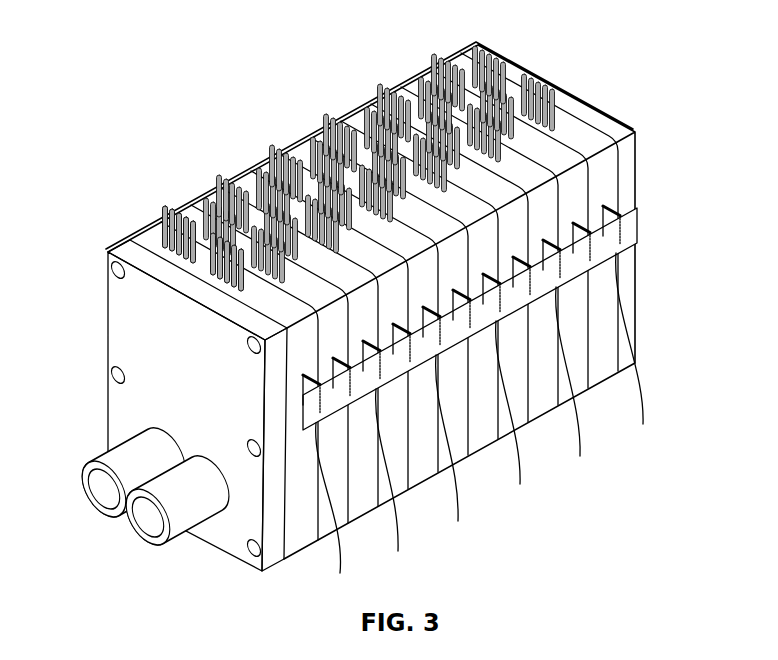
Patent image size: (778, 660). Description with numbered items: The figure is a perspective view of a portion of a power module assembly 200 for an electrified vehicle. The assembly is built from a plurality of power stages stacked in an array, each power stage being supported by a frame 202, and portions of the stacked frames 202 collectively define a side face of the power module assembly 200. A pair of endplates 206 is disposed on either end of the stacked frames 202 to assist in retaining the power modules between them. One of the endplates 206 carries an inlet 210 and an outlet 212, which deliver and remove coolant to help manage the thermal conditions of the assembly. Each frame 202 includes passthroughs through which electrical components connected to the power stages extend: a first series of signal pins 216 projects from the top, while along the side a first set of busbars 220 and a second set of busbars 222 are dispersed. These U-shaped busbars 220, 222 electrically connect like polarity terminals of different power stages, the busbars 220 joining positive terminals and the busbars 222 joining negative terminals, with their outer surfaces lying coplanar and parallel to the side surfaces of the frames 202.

The power module assembly 200 is at (160, 91).
The frame 202 is at (425, 55).
The endplate 206 is at (118, 350).
The inlet 210 is at (118, 460).
The outlet 212 is at (172, 533).
The first series of signal pins 216 is at (178, 240).
The first set of busbars 220 is at (340, 573).
The second set of busbars 222 is at (346, 406).